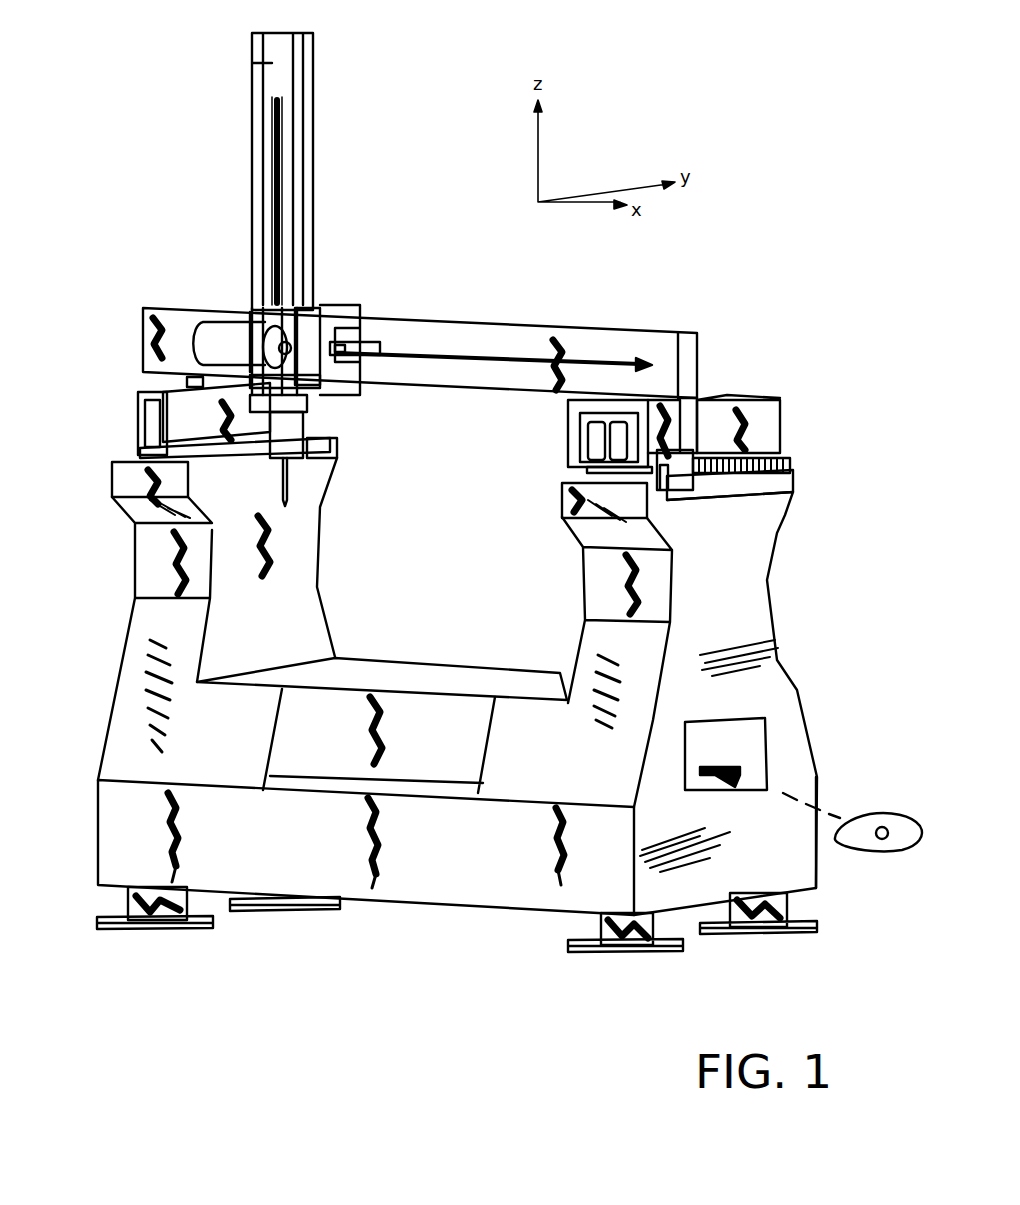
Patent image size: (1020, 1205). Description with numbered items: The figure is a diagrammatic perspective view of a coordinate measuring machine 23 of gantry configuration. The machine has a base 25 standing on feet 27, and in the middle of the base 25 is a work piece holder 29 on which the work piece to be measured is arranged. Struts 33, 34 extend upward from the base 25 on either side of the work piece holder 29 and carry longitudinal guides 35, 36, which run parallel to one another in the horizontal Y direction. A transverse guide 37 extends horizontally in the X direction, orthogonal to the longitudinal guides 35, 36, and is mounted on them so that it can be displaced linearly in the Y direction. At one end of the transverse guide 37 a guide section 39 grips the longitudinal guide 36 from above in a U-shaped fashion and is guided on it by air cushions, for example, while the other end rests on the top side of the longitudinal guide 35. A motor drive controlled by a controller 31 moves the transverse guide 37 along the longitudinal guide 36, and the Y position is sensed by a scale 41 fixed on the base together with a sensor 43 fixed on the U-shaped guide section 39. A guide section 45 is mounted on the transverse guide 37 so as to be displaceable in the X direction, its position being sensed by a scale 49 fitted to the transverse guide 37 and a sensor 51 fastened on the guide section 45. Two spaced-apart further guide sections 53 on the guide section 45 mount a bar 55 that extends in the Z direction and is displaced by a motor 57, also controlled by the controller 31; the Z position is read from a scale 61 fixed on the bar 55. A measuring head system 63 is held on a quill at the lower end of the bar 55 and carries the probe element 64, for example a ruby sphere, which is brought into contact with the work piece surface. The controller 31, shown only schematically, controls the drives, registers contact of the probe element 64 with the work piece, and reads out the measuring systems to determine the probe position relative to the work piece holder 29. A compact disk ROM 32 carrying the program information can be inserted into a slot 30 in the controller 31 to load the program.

The coordinate measuring machine 23 is at (463, 158).
The base 25 is at (420, 905).
The feet 27 is at (137, 932).
The work piece holder 29 is at (383, 673).
The slot 30 is at (708, 790).
The controller 31 is at (767, 735).
The compact disk ROM 32 is at (877, 853).
The strut 33 is at (318, 588).
The strut 34 is at (762, 583).
The longitudinal guide 35 is at (140, 418).
The longitudinal guide 36 is at (767, 417).
The transverse guide 37 is at (515, 342).
The guide section 39 is at (700, 400).
The scale 41 is at (790, 463).
The sensor 43 is at (686, 507).
The guide section 45 is at (347, 307).
The scale 49 is at (280, 285).
The sensor 51 is at (338, 350).
The guide sections 53 is at (243, 307).
The bar 55 is at (313, 117).
The motor 57 is at (212, 337).
The scale 61 is at (260, 123).
The measuring head system 63 is at (320, 462).
The probe element 64 is at (297, 510).